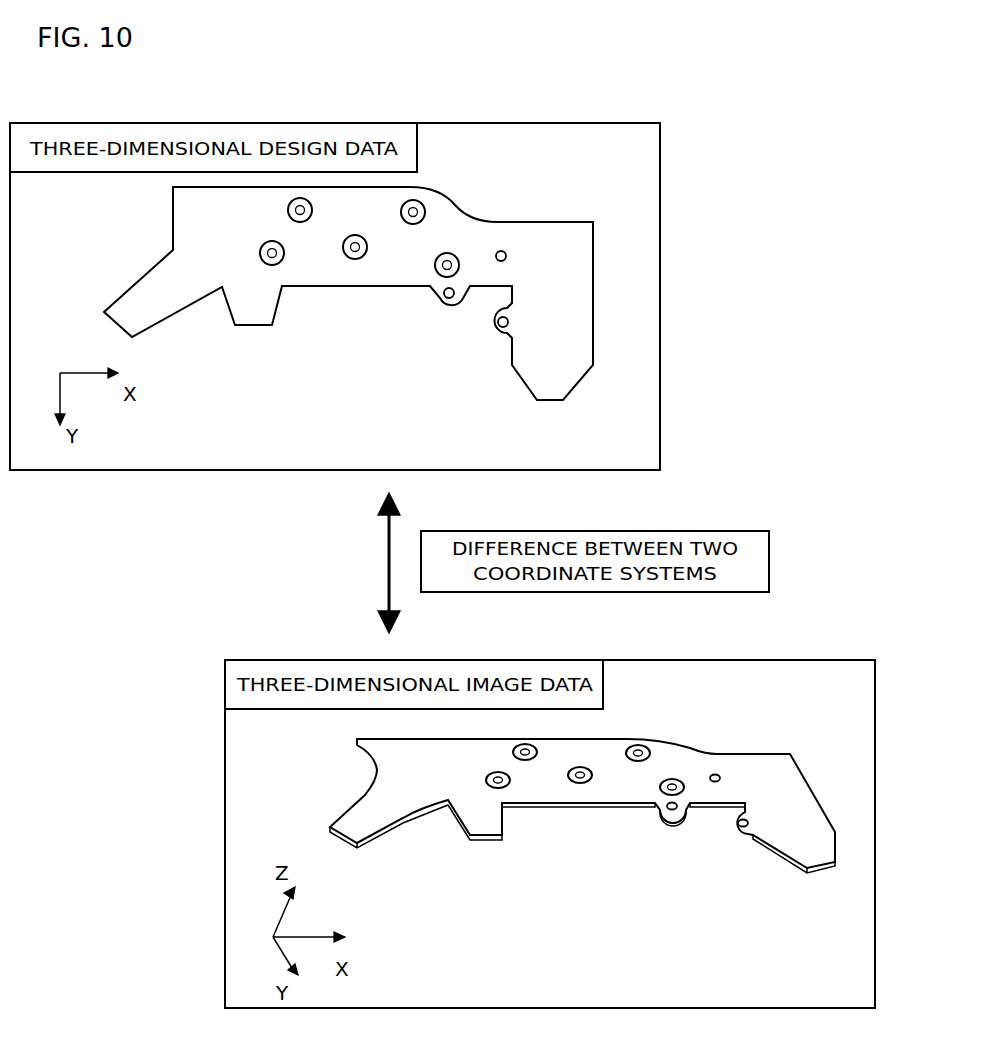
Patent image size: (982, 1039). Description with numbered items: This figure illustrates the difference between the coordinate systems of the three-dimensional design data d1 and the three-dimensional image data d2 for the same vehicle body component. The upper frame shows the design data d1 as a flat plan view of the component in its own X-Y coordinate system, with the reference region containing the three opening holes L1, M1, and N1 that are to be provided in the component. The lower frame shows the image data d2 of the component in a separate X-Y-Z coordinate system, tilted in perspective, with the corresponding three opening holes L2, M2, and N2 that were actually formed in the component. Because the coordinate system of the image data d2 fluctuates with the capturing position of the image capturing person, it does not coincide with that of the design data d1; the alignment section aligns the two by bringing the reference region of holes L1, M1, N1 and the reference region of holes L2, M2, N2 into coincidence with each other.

The three-dimensional design data d1 is at (450, 203).
The opening hole L1 is at (504, 253).
The opening hole M1 is at (445, 300).
The opening hole N1 is at (500, 329).
The three-dimensional image data d2 is at (670, 745).
The opening hole L2 is at (721, 777).
The opening hole M2 is at (665, 810).
The opening hole N2 is at (745, 830).